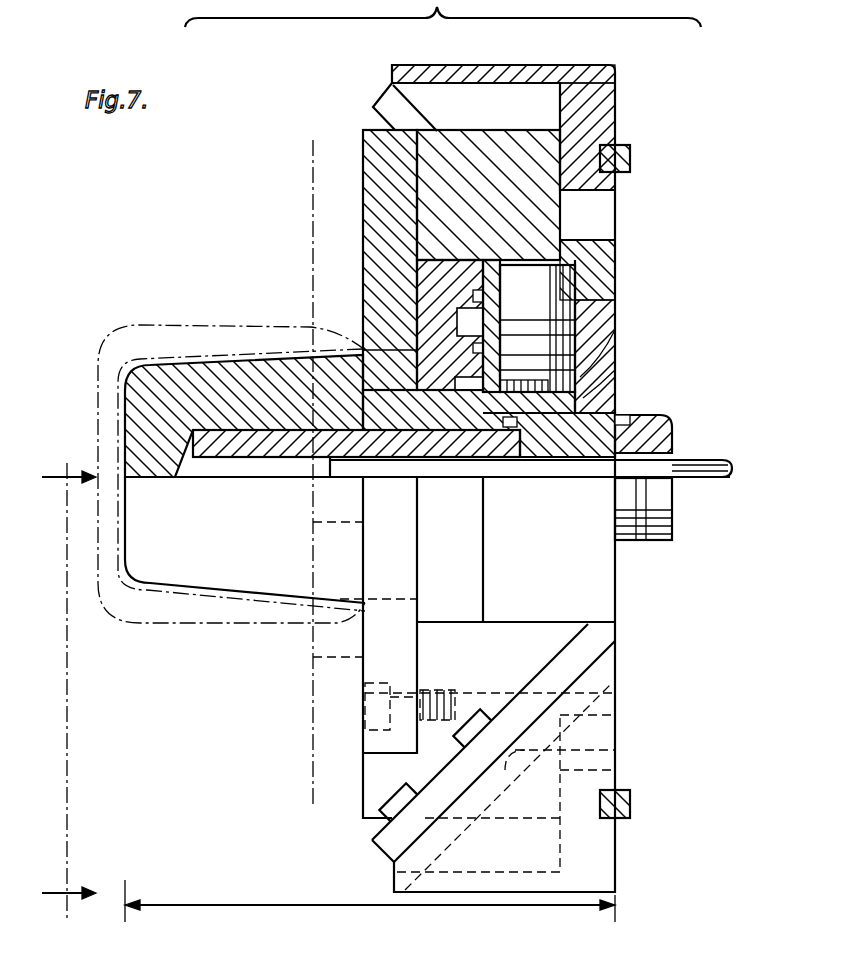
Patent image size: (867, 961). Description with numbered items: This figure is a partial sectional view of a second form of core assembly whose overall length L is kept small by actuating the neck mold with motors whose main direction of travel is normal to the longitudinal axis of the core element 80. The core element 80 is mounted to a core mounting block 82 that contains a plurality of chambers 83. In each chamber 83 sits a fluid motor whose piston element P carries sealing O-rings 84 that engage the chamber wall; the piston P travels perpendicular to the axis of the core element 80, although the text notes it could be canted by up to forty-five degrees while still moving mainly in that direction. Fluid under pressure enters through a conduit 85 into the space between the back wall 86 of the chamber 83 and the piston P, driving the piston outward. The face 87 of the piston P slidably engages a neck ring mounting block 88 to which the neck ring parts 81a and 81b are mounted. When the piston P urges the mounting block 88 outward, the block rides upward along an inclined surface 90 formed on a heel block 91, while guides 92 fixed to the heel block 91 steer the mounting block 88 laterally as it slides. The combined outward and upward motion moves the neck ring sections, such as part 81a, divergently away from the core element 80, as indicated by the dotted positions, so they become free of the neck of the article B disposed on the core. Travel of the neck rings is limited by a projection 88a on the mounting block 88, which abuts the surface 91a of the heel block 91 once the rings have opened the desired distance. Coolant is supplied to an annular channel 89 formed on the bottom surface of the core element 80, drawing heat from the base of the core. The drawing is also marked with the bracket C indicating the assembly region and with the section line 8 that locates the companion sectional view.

The core element 80 is at (150, 560).
The neck ring part 81a is at (363, 240).
The neck ring part 81b is at (383, 663).
The core mounting block 82 is at (617, 399).
The chamber 83 is at (583, 405).
The O-ring 84 is at (580, 378).
The conduit 85 is at (580, 392).
The back wall 86 is at (545, 407).
The face of the piston 87 is at (580, 248).
The mounting block 88 is at (535, 213).
The projection 88a is at (530, 132).
The annular channel 89 is at (455, 322).
The inclined surface 90 is at (600, 755).
The heel block 91 is at (590, 75).
The surface of the heel block 91a is at (446, 88).
The guide 92 is at (390, 856).
The piston element P is at (580, 290).
The article B is at (192, 625).
The cylinder assembly C is at (443, 13).
The section line 8- 8 is at (58, 692).
The overall length L is at (370, 903).